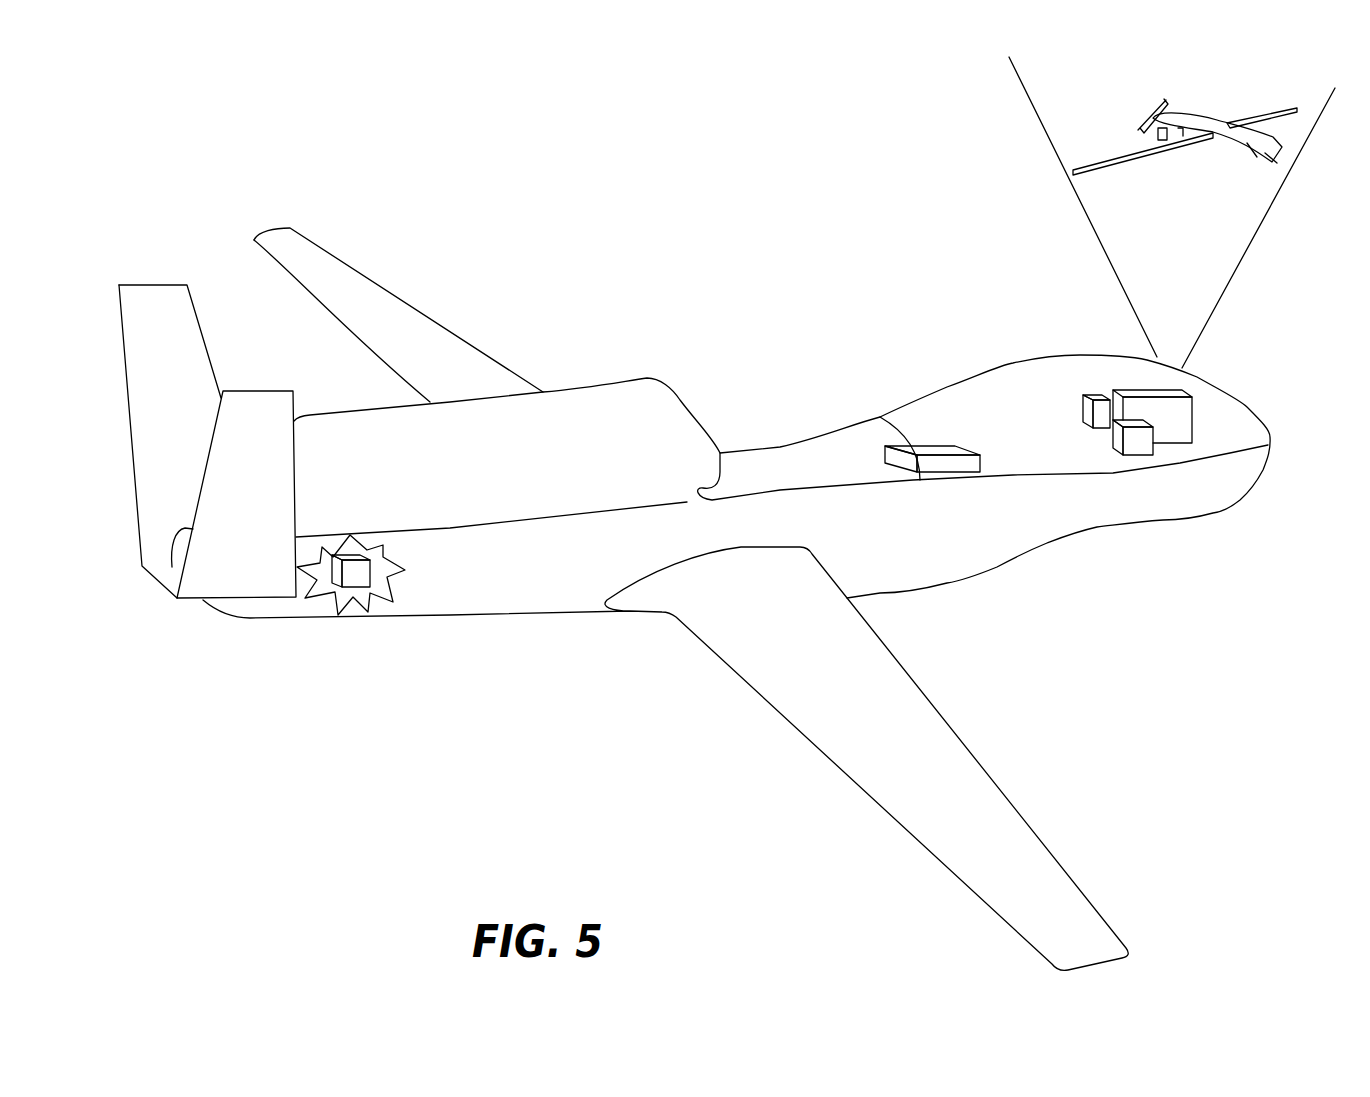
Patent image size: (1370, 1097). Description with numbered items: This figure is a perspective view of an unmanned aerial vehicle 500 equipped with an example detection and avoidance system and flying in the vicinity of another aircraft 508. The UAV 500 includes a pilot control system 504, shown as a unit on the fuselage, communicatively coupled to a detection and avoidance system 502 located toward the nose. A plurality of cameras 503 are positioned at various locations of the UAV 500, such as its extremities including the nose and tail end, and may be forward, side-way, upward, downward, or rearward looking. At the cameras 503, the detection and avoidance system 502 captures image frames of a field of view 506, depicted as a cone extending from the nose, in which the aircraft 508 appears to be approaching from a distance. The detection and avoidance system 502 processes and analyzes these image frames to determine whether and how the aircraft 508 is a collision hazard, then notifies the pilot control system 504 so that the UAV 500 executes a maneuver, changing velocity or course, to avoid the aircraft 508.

The unmanned aerial vehicle 500 is at (192, 136).
The detection and avoidance system 502 is at (1177, 410).
The cameras 503 is at (348, 582).
The pilot control system 504 is at (900, 463).
The field of view 506 is at (1057, 198).
The aircraft 508 is at (1252, 142).